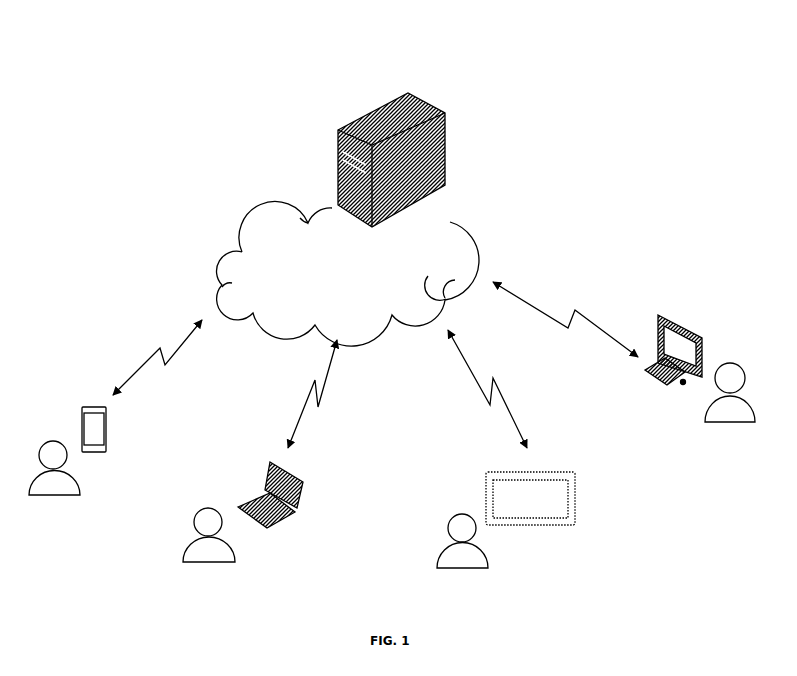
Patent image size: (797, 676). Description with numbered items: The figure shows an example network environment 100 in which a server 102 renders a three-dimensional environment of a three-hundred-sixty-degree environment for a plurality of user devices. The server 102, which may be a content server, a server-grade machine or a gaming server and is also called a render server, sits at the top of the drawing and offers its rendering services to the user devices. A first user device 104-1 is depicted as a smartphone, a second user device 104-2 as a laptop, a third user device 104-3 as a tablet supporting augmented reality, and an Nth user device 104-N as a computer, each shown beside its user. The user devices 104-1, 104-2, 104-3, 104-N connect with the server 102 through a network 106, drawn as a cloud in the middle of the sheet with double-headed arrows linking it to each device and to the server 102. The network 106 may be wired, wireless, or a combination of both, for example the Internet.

The network environment 100 is at (211, 58).
The server 102 is at (425, 105).
The first user device 104-1 is at (80, 397).
The second user device 104-2 is at (273, 458).
The third user device 104-3 is at (483, 463).
The Nth user device 104-N is at (697, 327).
The network 106 is at (347, 274).